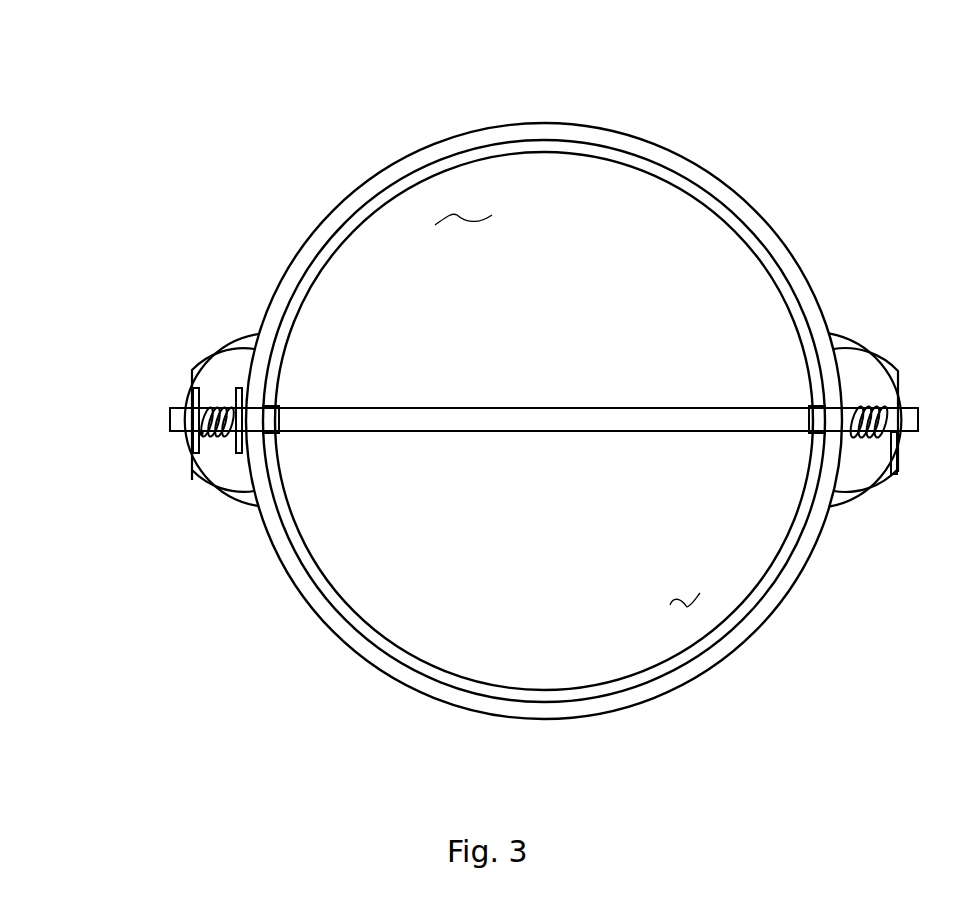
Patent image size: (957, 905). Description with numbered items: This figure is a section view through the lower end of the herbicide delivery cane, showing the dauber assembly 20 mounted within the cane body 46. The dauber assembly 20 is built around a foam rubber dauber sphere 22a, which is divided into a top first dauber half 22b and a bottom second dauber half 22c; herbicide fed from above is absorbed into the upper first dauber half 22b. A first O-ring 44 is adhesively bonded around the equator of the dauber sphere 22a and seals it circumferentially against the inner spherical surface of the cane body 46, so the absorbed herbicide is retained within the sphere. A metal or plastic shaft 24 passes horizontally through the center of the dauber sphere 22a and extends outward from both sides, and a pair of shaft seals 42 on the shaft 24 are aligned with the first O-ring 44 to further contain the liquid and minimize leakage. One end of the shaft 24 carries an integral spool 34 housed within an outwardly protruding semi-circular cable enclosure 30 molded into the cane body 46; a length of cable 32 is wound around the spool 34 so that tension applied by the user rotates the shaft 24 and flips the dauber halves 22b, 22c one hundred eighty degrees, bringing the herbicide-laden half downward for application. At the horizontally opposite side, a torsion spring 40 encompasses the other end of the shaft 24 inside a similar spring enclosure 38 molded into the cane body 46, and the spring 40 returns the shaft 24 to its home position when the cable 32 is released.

The dauber assembly 20 is at (95, 166).
The dauber sphere 22a is at (641, 680).
The first dauber half 22b is at (457, 215).
The second dauber half 22c is at (687, 607).
The shaft 24 is at (335, 415).
The cable enclosure 30 is at (183, 367).
The cable 32 is at (221, 407).
The spool 34 is at (237, 455).
The spring enclosure 38 is at (892, 360).
The torsion spring 40 is at (865, 438).
The shaft seals 42 is at (272, 433).
The first O-ring 44 is at (638, 156).
The cane body 46 is at (594, 126).